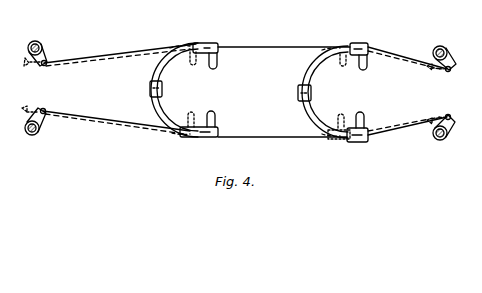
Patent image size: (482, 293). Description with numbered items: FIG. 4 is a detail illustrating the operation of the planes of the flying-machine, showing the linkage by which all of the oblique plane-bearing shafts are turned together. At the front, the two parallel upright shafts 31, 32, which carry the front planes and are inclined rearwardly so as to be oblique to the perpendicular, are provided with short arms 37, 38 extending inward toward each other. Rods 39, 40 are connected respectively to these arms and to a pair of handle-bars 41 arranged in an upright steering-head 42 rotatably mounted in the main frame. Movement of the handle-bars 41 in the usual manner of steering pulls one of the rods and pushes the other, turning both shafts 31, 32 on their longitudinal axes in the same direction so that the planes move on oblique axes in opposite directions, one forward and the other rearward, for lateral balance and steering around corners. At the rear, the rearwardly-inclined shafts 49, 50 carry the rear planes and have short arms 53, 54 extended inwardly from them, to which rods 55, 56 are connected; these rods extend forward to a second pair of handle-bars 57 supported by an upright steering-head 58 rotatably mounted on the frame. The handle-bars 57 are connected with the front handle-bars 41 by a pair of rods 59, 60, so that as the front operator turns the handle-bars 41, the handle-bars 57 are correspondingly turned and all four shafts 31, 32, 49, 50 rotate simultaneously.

The upright shaft 31 is at (37, 134).
The upright shaft 32 is at (41, 46).
The short arm 37 is at (46, 110).
The short arm 38 is at (44, 67).
The rod 39 is at (106, 120).
The rod 40 is at (133, 48).
The handle-bars 41 is at (165, 76).
The upright steering-head 42 is at (150, 88).
The rearwardly-inclined shaft 49 is at (446, 138).
The rearwardly-inclined shaft 50 is at (447, 48).
The short arm 53 is at (453, 116).
The short arm 54 is at (456, 63).
The rod 55 is at (403, 125).
The rod 56 is at (397, 55).
The handle-bars 57 is at (314, 79).
The upright steering-head 58 is at (298, 93).
The rod 59 is at (268, 137).
The rod 60 is at (280, 47).